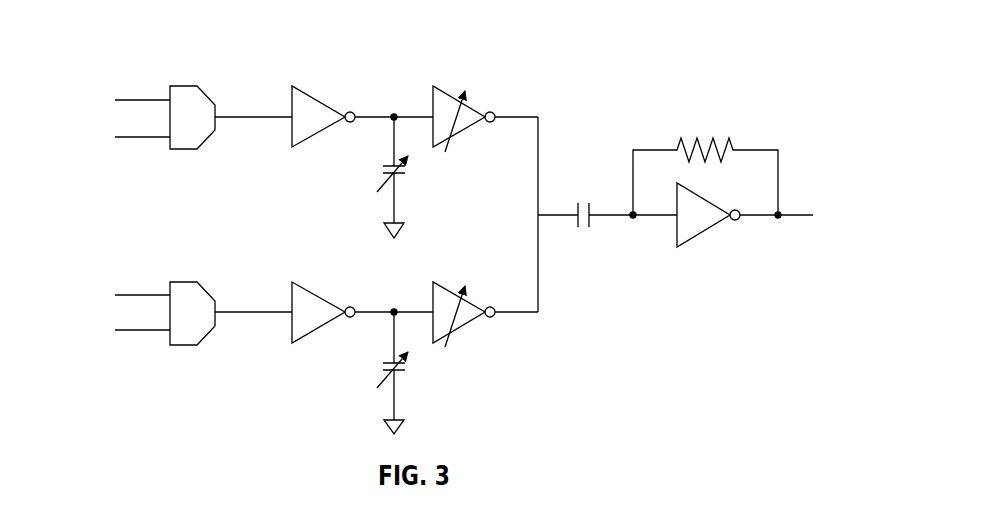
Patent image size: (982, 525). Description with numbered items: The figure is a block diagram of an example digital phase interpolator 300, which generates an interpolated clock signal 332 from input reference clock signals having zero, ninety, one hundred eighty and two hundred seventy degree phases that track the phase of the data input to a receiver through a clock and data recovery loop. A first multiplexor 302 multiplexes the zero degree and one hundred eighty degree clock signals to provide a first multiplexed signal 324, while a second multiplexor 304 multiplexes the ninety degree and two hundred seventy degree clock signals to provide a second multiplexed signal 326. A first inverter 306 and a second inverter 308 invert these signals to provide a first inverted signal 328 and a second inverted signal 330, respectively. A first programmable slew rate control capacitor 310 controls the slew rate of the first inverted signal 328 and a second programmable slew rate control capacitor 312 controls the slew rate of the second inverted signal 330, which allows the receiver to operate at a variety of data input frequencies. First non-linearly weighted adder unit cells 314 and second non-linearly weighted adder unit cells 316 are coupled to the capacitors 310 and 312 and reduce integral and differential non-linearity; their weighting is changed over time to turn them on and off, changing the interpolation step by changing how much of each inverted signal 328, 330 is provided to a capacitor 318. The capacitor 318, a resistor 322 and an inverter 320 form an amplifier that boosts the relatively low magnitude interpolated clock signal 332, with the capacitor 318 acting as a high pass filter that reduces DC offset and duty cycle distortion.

The digital phase interpolator 300 is at (699, 45).
The first multiplexor 302 is at (185, 86).
The second multiplexor 304 is at (185, 282).
The first inverter 306 is at (320, 100).
The second inverter 308 is at (320, 297).
The first programmable slew rate control capacitor 310 is at (400, 176).
The second programmable slew rate control capacitor 312 is at (400, 372).
The first non-linearly weighted adder unit cells 314 is at (470, 103).
The second non-linearly weighted adder unit cells 316 is at (455, 330).
The capacitor 318 is at (593, 222).
The inverter 320 is at (705, 233).
The resistor 322 is at (723, 142).
The first multiplexed signal 324 is at (272, 116).
The second multiplexed signal 326 is at (276, 312).
The first inverted signal 328 is at (382, 122).
The second inverted signal 330 is at (376, 318).
The interpolated clock signal 332 is at (807, 220).